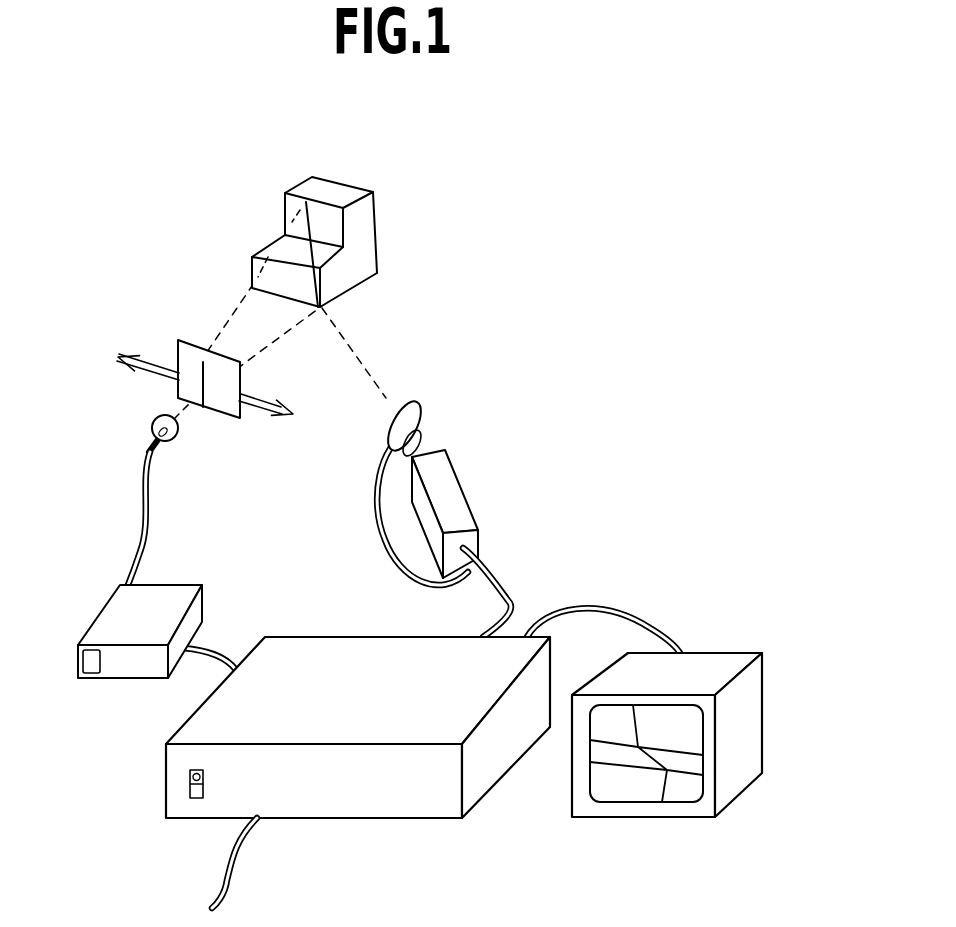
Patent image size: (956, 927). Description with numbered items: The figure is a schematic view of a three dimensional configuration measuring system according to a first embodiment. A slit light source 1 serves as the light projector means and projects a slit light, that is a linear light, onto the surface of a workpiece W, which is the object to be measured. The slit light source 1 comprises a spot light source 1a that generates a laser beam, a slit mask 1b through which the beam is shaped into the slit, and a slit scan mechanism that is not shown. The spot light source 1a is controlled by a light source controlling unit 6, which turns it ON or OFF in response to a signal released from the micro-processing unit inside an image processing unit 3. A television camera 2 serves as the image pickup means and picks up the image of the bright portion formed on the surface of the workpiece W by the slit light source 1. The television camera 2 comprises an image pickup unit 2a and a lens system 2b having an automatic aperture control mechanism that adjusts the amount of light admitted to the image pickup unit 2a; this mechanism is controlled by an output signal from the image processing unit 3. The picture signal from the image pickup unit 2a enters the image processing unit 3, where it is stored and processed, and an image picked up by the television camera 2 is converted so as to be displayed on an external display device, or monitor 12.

The workpiece W is at (377, 227).
The slit light source 1 is at (114, 383).
The spot light source 1a is at (152, 427).
The slit mask 1b is at (178, 342).
The television camera 2 is at (481, 508).
The image pickup unit 2a is at (465, 518).
The lens system 2b is at (402, 418).
The image processing unit 3 is at (362, 800).
The light source controlling unit 6 is at (102, 613).
The external display device (monitor) 12 is at (765, 723).